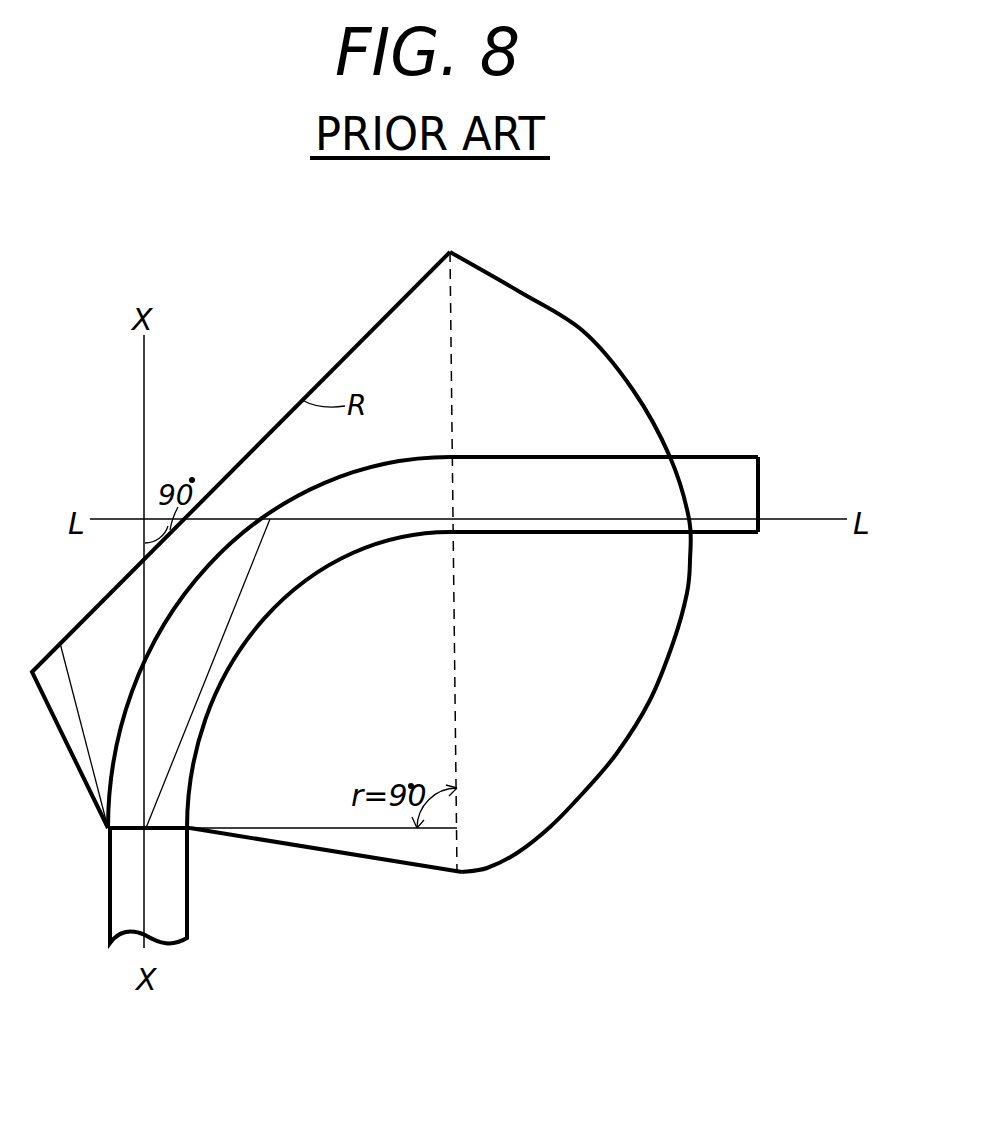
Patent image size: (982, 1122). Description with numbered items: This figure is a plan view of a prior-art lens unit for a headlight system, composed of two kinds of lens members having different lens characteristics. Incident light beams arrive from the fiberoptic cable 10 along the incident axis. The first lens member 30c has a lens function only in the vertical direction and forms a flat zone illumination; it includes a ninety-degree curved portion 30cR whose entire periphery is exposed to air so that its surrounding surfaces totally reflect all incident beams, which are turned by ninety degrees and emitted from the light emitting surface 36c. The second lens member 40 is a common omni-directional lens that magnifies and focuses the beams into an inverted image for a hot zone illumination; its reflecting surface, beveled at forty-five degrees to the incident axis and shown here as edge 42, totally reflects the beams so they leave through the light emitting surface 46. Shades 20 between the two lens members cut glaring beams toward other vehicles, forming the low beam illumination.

The fiberoptic cable 10 is at (170, 906).
The shades 20 is at (106, 832).
The first lens member 30c is at (503, 478).
The 90-degree-curved-portion 30cR is at (268, 598).
The light emitting surface 36c is at (760, 476).
The second lens member 40 is at (380, 855).
The leading edge 42 is at (355, 347).
The light emitting surface 46 is at (582, 332).